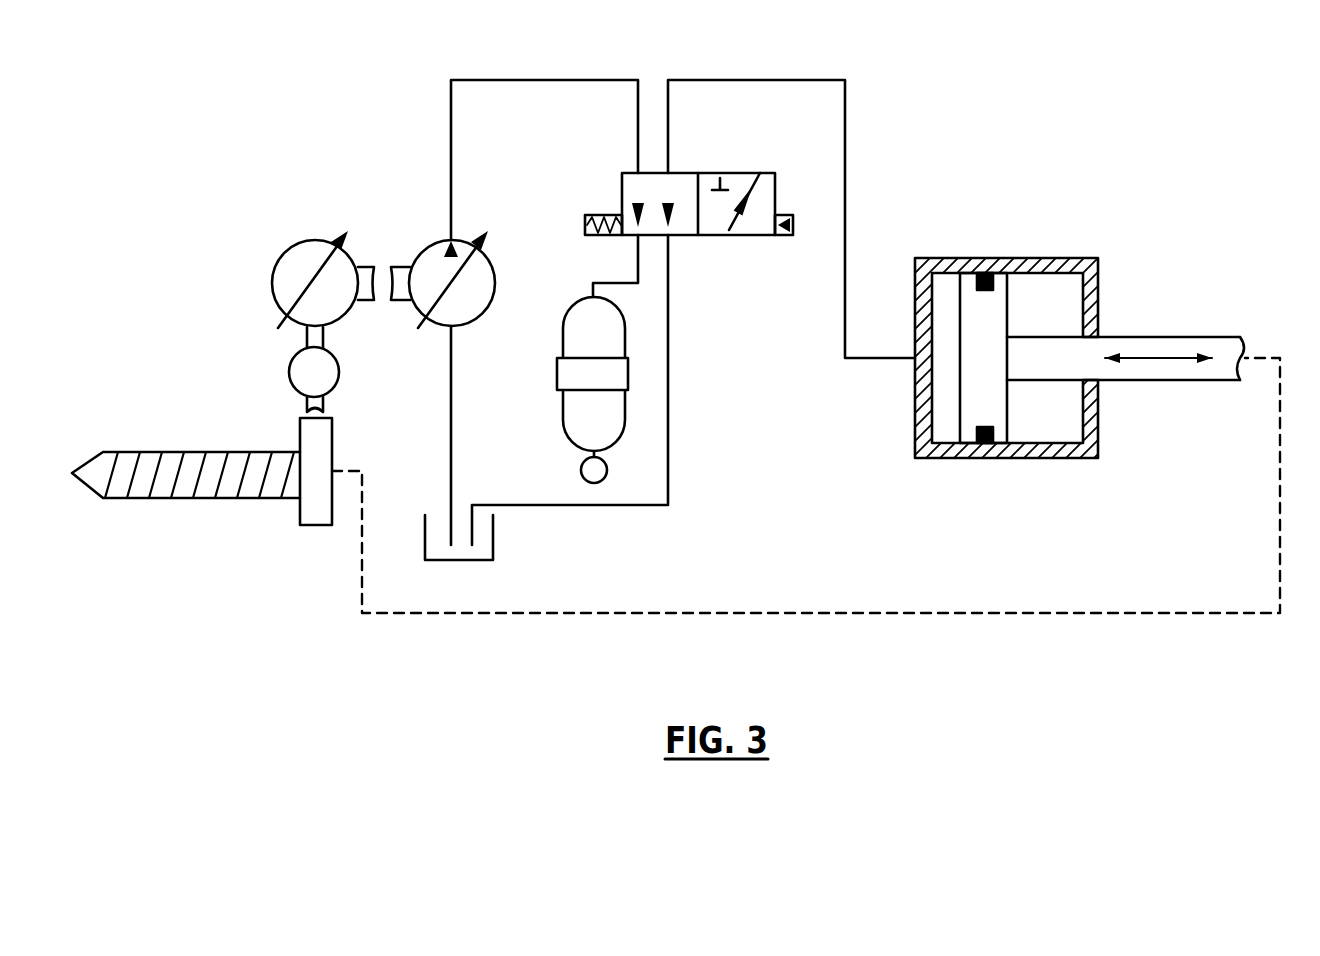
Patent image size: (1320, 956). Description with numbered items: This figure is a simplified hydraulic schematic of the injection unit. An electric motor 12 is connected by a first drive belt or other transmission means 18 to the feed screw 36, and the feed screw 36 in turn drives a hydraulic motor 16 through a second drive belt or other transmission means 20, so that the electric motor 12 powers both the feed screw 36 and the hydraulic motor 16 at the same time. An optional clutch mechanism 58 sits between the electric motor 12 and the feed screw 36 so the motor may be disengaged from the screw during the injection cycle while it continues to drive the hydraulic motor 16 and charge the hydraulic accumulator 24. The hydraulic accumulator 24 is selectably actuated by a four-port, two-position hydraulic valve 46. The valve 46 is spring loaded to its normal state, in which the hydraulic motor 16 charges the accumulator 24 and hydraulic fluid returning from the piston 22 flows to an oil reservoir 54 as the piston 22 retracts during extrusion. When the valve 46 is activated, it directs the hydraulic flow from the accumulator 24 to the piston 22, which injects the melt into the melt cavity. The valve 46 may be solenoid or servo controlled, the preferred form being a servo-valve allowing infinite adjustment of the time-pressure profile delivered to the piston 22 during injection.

The electric motor 12 is at (293, 245).
The hydraulic motor 16 is at (435, 240).
The second drive belt or other transmission means 20 is at (380, 267).
The hydraulic accumulator 24 is at (570, 303).
The hydraulic valve 46 is at (718, 236).
The piston assembly 22 is at (942, 487).
The oil reservoir 54 is at (495, 538).
The feed screw 36 is at (187, 498).
The clutch mechanism 58 is at (290, 372).
The first drive belt or other transmission means 18 is at (305, 402).